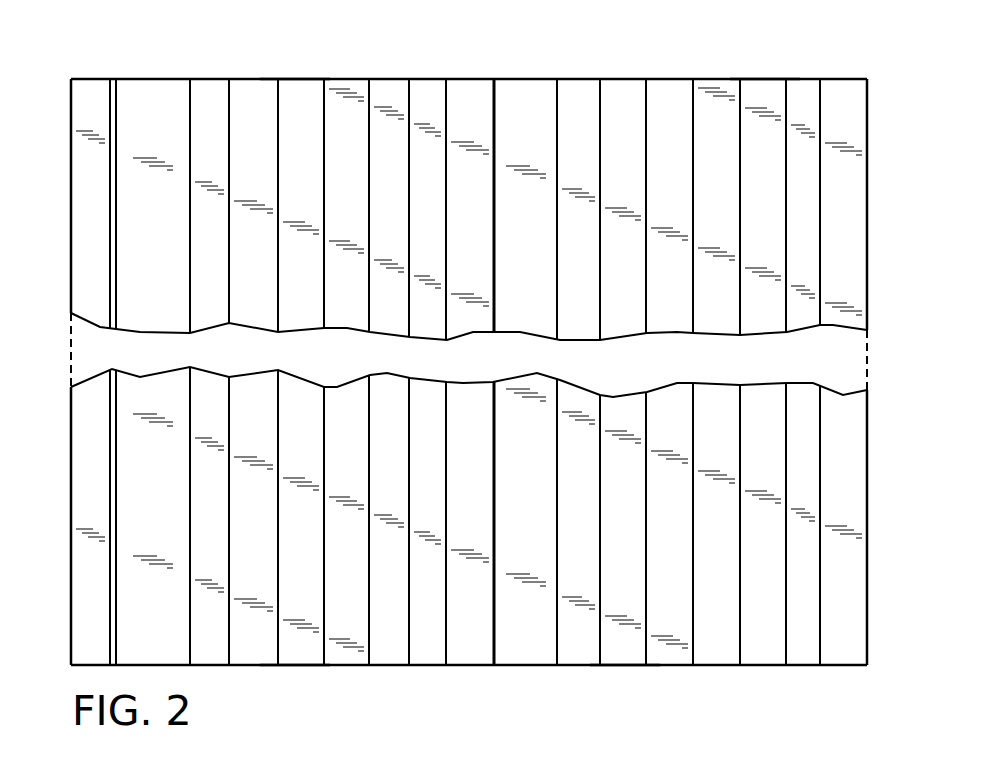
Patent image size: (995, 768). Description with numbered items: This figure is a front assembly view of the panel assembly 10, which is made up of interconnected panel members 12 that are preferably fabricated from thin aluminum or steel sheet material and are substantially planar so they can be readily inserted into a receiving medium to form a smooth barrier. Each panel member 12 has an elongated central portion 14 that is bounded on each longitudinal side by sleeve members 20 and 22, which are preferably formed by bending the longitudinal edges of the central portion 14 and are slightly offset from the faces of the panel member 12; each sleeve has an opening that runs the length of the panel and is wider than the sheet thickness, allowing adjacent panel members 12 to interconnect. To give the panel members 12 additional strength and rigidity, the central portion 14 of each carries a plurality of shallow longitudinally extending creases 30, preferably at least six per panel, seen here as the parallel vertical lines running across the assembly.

The panel assembly 10 is at (568, 75).
The panel member 12 is at (288, 78).
The central portion 14 is at (298, 667).
The sleeve member 20 is at (102, 452).
The sleeve member 22 is at (857, 452).
The creases 30 is at (324, 79).